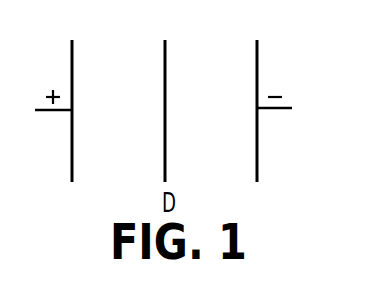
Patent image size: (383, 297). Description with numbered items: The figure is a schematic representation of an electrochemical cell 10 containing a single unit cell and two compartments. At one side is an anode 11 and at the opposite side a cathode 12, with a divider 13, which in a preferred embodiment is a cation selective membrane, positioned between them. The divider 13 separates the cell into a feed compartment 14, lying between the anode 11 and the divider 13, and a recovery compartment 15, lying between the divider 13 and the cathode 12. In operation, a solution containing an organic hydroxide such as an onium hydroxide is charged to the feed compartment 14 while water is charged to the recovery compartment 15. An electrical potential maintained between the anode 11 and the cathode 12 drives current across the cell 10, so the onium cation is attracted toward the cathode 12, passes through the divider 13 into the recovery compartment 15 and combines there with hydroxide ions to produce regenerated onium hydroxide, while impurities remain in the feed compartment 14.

The electrochemical cell 10 is at (302, 40).
The anode 11 is at (53, 96).
The cathode 12 is at (269, 96).
The divider 13 is at (168, 96).
The feed compartment 14 is at (121, 173).
The recovery compartment 15 is at (213, 173).